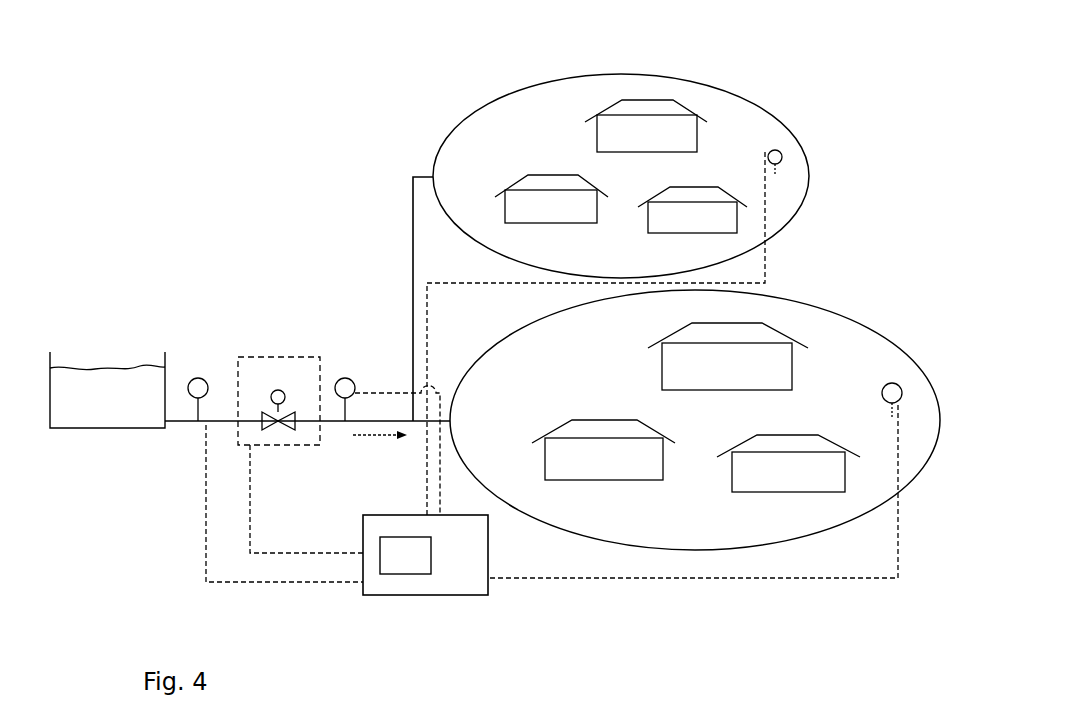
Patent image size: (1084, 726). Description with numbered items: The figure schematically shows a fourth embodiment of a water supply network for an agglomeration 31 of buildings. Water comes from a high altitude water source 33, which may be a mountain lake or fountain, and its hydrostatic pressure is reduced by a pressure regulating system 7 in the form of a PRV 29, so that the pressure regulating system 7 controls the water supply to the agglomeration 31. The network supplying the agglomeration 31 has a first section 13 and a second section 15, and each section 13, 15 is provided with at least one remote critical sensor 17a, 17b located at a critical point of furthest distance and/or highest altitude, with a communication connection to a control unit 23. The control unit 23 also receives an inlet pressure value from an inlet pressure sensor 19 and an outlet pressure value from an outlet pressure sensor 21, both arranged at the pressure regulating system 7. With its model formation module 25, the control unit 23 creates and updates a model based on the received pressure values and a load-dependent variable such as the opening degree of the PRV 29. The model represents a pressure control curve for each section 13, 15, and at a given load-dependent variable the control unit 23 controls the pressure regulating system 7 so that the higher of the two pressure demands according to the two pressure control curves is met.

The pressure regulating system 7 is at (288, 357).
The first section 13 is at (795, 302).
The second section 15 is at (565, 80).
The remote critical sensor 17a is at (911, 378).
The remote critical sensor 17b is at (795, 143).
The inlet pressure sensor 19 is at (208, 345).
The outlet pressure sensor 21 is at (372, 362).
The control unit 23 is at (418, 596).
The model formation module 25 is at (431, 543).
The PRV 29 is at (277, 423).
The agglomeration 31 is at (378, 143).
The high altitude water source 33 is at (75, 428).